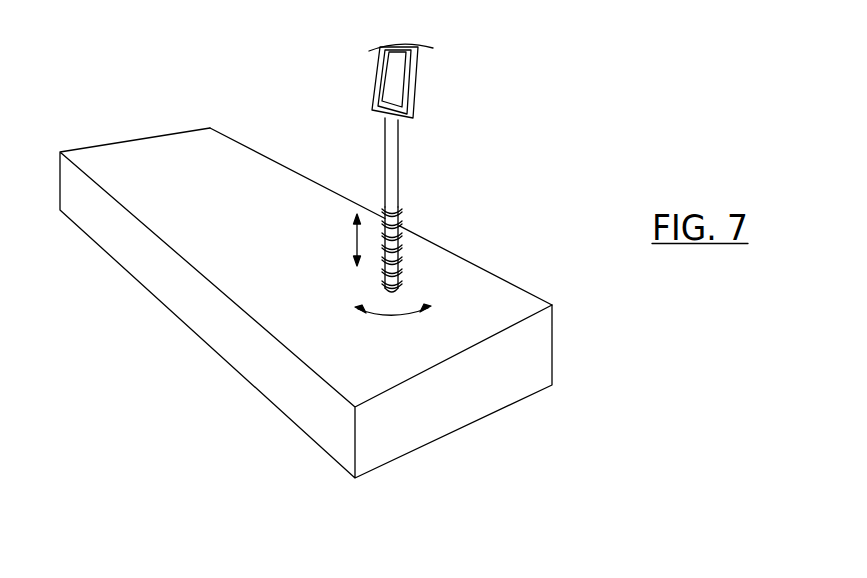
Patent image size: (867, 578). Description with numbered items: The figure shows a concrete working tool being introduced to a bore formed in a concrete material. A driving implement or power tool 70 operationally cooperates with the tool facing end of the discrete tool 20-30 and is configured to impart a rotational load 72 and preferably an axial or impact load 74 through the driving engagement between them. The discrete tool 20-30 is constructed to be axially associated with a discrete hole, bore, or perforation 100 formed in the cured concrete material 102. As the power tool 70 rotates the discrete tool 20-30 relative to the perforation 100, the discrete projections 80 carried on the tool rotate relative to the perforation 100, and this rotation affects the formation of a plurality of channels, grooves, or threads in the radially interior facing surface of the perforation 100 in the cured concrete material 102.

The driving implement or power tool 70 is at (422, 60).
The discrete projections 80 is at (402, 255).
The axial or impact load 74 is at (353, 239).
The perforation 100 is at (390, 291).
The rotational load 72 is at (393, 319).
The cured concrete material 102 is at (250, 252).
The discrete tools 20-30 is at (319, 183).